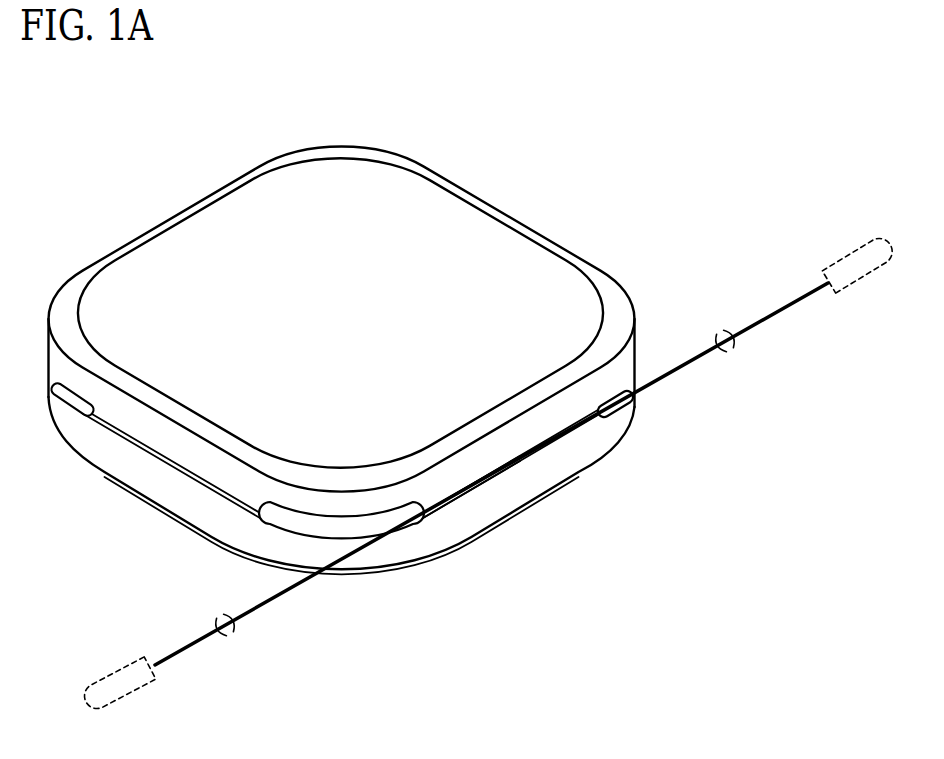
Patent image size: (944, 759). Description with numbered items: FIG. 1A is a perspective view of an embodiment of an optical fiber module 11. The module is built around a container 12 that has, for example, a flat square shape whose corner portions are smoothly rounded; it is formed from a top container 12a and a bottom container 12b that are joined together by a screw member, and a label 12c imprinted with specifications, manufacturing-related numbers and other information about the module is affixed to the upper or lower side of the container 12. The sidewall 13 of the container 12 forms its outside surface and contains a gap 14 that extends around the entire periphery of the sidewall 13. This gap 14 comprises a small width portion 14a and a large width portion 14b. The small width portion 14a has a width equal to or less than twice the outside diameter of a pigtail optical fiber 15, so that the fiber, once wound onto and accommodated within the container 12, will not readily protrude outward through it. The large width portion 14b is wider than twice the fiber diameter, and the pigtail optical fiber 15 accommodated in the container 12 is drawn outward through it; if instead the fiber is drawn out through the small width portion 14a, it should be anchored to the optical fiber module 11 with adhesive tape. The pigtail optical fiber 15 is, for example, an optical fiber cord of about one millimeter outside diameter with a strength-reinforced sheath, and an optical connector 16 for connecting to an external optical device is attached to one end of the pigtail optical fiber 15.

The optical fiber module 11 is at (538, 203).
The container 12 is at (595, 265).
The top container 12a is at (183, 493).
The bottom container 12b is at (150, 435).
The label 12c is at (212, 227).
The sidewall 13 is at (540, 468).
The gap 14 is at (462, 660).
The small width portion 14a is at (447, 510).
The large width portion 14b is at (343, 527).
The pigtail optical fiber 15 is at (190, 642).
The optical connector 16 is at (133, 685).